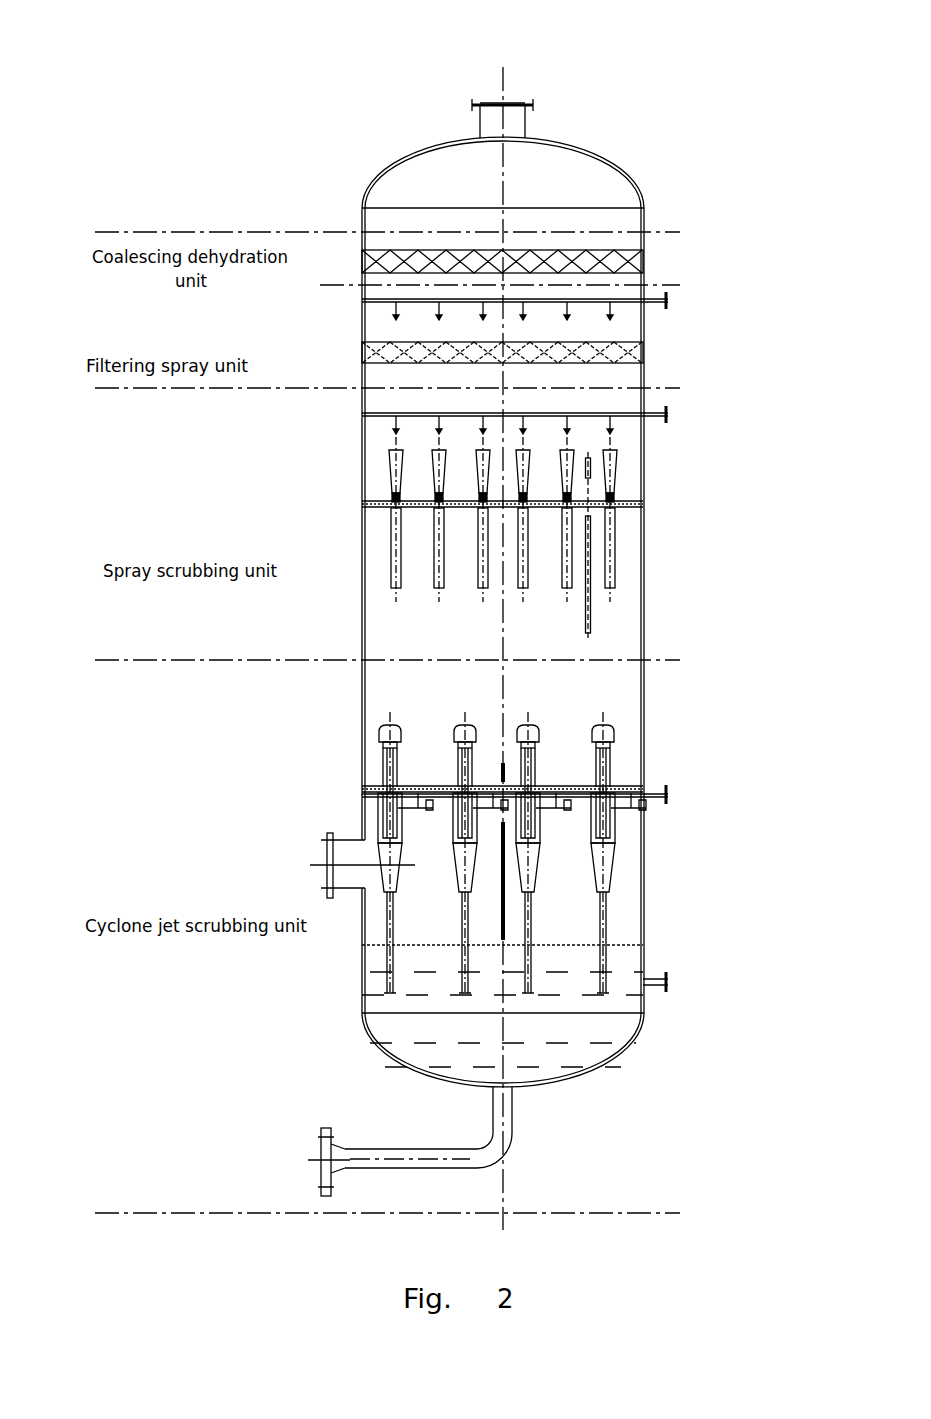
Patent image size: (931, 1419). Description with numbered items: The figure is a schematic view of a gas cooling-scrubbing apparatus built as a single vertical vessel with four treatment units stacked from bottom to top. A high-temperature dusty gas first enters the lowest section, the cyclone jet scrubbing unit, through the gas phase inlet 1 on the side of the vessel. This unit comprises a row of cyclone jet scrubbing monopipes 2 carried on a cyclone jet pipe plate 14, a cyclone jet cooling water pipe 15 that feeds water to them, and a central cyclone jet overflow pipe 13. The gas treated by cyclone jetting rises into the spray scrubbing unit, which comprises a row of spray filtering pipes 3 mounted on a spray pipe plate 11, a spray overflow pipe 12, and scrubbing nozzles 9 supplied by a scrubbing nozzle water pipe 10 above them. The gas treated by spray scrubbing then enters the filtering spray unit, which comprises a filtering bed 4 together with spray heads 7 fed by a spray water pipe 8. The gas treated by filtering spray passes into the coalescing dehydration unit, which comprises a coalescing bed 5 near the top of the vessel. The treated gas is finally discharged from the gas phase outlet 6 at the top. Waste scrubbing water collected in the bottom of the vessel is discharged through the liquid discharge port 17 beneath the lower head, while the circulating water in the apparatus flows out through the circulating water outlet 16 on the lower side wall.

The gas phase inlet 1 is at (330, 862).
The cyclone jet scrubbing monopipe 2 is at (390, 780).
The spray filtering pipe 3 is at (395, 520).
The filtering bed 4 is at (365, 350).
The coalescing bed 5 is at (365, 250).
The gas phase outlet 6 is at (500, 105).
The spray head 7 is at (612, 310).
The spray water pipe 8 is at (668, 303).
The scrubbing nozzle 9 is at (613, 425).
The scrubbing nozzle water pipe 10 is at (668, 418).
The spray pipe plate 11 is at (640, 502).
The spray overflow pipe 12 is at (590, 625).
The cyclone jet overflow pipe 13 is at (505, 763).
The cyclone jet pipe plate 14 is at (617, 787).
The cyclone jet cooling water pipe 15 is at (668, 793).
The circulating water outlet 16 is at (672, 982).
The liquid discharge port 17 is at (326, 1163).